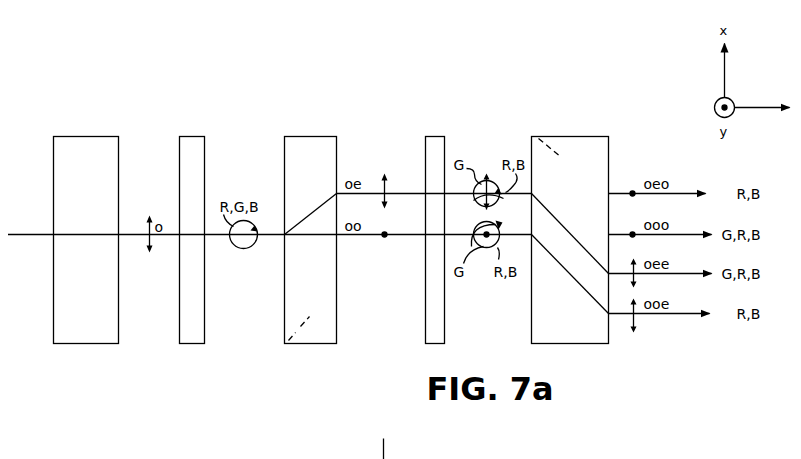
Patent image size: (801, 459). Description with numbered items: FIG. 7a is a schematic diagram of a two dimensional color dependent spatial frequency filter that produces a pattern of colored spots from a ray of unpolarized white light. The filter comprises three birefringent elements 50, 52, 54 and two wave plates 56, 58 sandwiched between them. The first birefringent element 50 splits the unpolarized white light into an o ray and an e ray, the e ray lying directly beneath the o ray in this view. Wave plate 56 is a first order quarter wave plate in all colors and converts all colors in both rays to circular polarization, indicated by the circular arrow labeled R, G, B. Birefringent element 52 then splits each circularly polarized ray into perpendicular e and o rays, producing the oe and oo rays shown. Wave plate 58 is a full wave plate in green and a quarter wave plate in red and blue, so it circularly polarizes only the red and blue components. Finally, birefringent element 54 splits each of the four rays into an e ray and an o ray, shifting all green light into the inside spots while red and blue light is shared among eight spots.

The first birefringent element 50 is at (84, 135).
The wave plate 56 is at (192, 135).
The birefringent element 52 is at (307, 135).
The wave plate 58 is at (433, 135).
The birefringent element 54 is at (570, 135).